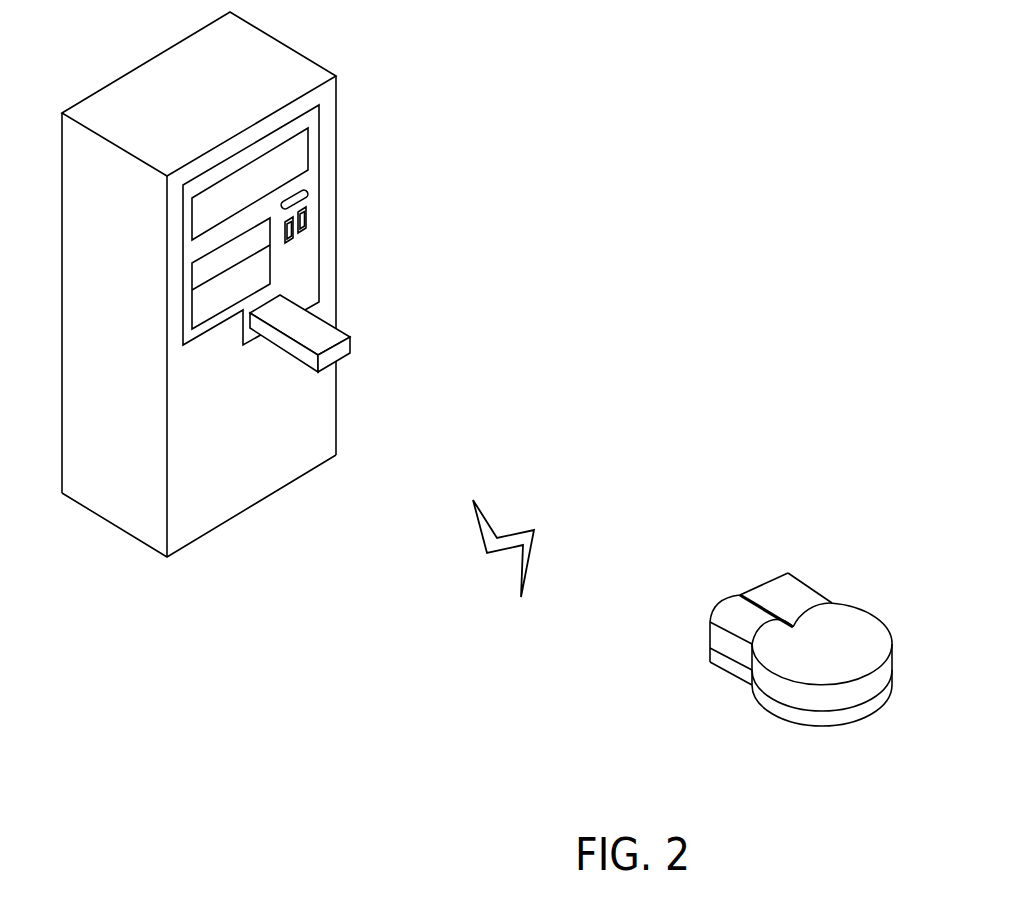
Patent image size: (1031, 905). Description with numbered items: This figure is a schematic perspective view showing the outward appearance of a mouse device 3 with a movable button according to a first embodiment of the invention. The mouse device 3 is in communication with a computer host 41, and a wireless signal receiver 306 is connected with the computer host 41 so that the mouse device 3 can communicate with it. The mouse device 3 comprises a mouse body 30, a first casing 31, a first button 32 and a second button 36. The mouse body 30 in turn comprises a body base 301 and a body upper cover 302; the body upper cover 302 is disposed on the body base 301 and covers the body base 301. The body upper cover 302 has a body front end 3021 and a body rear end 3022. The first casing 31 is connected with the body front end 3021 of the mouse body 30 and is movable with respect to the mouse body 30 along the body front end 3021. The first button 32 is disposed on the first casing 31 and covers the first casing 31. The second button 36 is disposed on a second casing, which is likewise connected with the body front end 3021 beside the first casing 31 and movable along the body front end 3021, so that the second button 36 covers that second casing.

The computer host 41 is at (282, 53).
The wireless signal receiver 306 is at (318, 332).
The mouse device 3 is at (830, 638).
The mouse body 30 is at (873, 672).
The body upper cover 302 is at (854, 672).
The body front end 3021 is at (807, 622).
The body rear end 3022 is at (858, 668).
The body base 301 is at (863, 712).
The first button 32 is at (759, 609).
The first casing 31 is at (722, 663).
The second button 36 is at (790, 587).